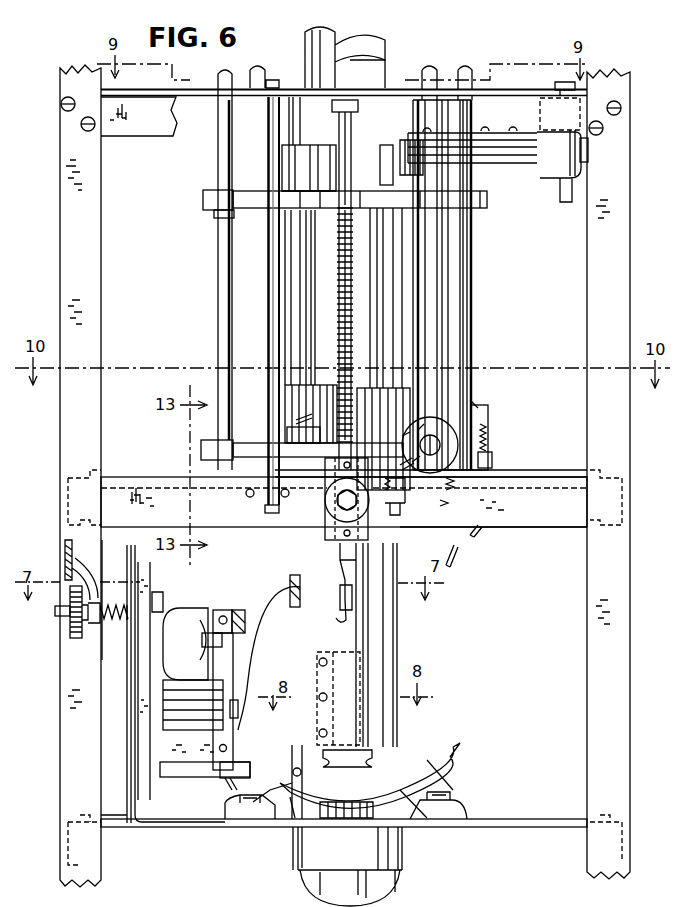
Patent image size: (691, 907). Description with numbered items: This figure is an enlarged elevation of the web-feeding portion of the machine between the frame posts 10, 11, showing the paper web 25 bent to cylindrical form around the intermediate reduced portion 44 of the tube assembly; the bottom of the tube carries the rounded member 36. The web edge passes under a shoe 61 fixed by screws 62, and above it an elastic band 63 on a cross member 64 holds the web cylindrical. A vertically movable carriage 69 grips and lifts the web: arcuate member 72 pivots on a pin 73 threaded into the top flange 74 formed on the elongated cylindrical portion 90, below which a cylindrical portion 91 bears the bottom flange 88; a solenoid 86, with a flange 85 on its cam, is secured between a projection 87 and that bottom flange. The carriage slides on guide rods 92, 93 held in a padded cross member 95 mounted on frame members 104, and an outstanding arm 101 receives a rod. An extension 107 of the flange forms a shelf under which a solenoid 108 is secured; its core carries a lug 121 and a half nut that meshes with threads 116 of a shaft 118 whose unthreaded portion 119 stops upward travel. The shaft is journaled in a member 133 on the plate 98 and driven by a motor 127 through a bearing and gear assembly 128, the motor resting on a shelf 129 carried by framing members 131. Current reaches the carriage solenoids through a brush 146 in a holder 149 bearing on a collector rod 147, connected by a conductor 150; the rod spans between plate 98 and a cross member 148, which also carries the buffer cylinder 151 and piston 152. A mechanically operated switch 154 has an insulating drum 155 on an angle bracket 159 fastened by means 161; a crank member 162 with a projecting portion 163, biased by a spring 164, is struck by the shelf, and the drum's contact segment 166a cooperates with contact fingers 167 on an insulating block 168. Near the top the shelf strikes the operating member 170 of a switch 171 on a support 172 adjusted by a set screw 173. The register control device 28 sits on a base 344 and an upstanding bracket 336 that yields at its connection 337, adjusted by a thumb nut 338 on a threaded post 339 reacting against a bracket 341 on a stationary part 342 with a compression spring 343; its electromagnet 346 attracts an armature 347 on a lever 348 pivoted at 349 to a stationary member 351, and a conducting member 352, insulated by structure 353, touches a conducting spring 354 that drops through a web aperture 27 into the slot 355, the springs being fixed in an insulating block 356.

The left frame post 10 is at (60, 277).
The right frame post 11 is at (630, 272).
The paper web 25 is at (401, 863).
The web apertures 27 is at (294, 774).
The register control device 28 is at (190, 653).
The pipe cap 36 is at (396, 890).
The intermediate reduced portion 44 is at (306, 44).
The shoe 61 is at (370, 655).
The screws 62 is at (336, 691).
The elastic band 63 is at (409, 520).
The cross member 64 is at (544, 495).
The carriage 69 is at (301, 330).
The arcuate member 72 is at (328, 150).
The pin 73 is at (284, 140).
The top flange 74 is at (331, 195).
The flange 85 is at (434, 144).
The solenoid 86 is at (440, 290).
The projection 87 is at (487, 205).
The bottom flange 88 is at (203, 446).
The elongated cylindrical portion 90 is at (288, 305).
The cylindrical portion 91 is at (318, 386).
The guide rod 92 is at (219, 292).
The guide rod 93 is at (473, 240).
The cross member 95 is at (535, 480).
The plate 98 is at (505, 93).
The outstanding arm 101 is at (203, 200).
The frame members 104 is at (68, 493).
The extension (shelf) 107 is at (362, 442).
The solenoid 108 is at (325, 502).
The threads 116 is at (340, 256).
The shaft 118 is at (340, 286).
The upper unthreaded portion 119 is at (355, 125).
The lug 121 is at (362, 516).
The motor 127 is at (453, 760).
The combined bearing and gear assembly 128 is at (298, 831).
The shelf 129 is at (504, 823).
The framing members 131 is at (68, 852).
The member 133 is at (362, 84).
The brush 146 is at (290, 432).
The collector rod 147 is at (266, 284).
The cross member 148 is at (530, 520).
The holder 149 is at (318, 449).
The conductor 150 is at (300, 425).
The cylinder 151 is at (331, 611).
The piston 152 is at (334, 612).
The mechanically operated switch 154 is at (490, 422).
The insulating drum 155 is at (430, 436).
The angle bracket 159 is at (486, 522).
The securing means 161 is at (462, 503).
The switch operating crank member 162 is at (488, 431).
The projecting portion 163 is at (406, 470).
The spring 164 is at (488, 446).
The contact segment 166a is at (414, 427).
The contact fingers 167 is at (488, 408).
The insulating block 168 is at (470, 533).
The operating member 170 is at (373, 168).
The switch 171 is at (508, 116).
The support 172 is at (560, 204).
The set screw 173 is at (598, 150).
The upstanding bracket 336 is at (127, 747).
The point of connection 337 is at (138, 824).
The thumb nut 338 is at (72, 628).
The threaded post 339 is at (57, 610).
The bracket 341 is at (95, 580).
The stationary part 342 is at (66, 548).
The compression spring 343 is at (110, 616).
The base 344 is at (150, 578).
The electromagnet 346 is at (240, 695).
The armature 347 is at (238, 710).
The lever 348 is at (235, 665).
The pivot 349 is at (227, 749).
The stationary member 351 is at (205, 756).
The conducting member 352 is at (234, 650).
The insulating structure 353 is at (240, 604).
The conducting springs 354 is at (270, 588).
The perforation or slot 355 is at (269, 645).
The insulating block 356 is at (225, 772).